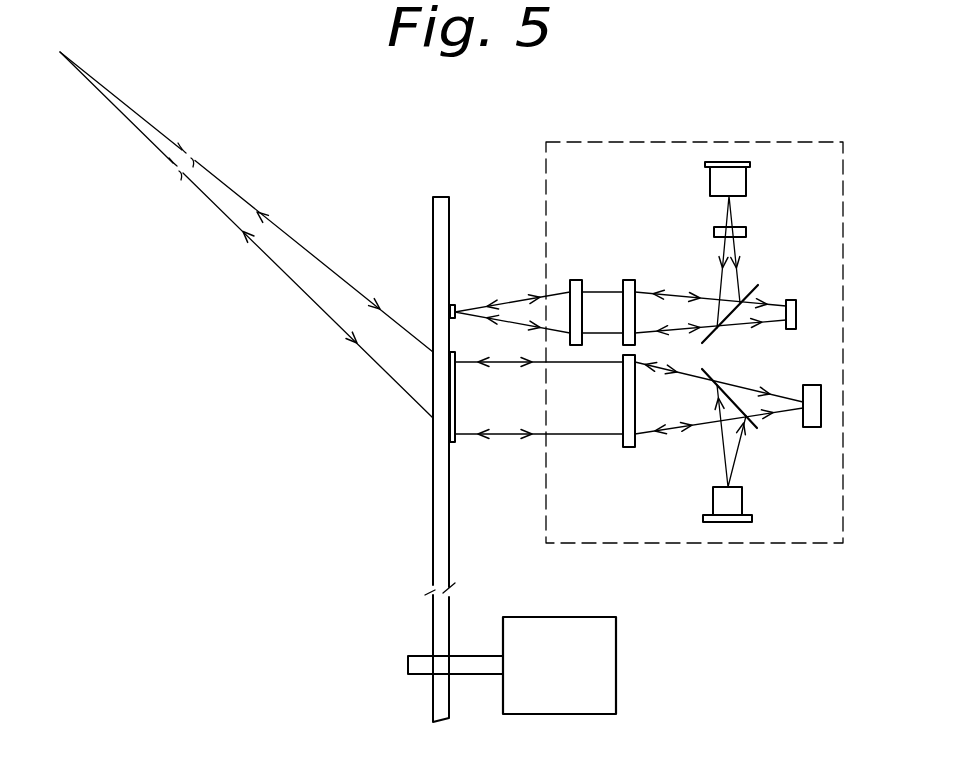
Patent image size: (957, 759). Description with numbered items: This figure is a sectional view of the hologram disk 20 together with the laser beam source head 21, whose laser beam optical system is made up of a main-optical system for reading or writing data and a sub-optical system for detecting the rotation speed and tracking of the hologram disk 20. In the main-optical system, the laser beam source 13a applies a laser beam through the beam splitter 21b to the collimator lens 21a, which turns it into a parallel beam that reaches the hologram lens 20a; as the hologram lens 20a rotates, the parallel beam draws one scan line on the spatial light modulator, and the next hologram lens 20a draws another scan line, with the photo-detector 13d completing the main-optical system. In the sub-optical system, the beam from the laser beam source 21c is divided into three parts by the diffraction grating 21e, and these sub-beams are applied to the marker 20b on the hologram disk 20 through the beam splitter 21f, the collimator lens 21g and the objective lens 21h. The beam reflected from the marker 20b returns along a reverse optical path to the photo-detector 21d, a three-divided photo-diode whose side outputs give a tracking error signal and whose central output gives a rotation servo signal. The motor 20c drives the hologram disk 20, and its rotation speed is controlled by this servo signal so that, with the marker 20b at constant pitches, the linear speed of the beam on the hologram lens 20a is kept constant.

The hologram disk 20 is at (438, 197).
The hologram lens 20a is at (456, 443).
The marker 20b is at (457, 306).
The motor 20c is at (616, 662).
The laser beam source head 21 is at (545, 152).
The collimator lens 21a is at (633, 450).
The beam splitter 21b is at (752, 430).
The laser beam source 21c is at (746, 180).
The photo-detector 21d is at (796, 314).
The diffraction grating 21e is at (714, 232).
The beam splitter 21f is at (758, 286).
The collimator lens 21g is at (631, 280).
The objective lens 21h is at (577, 280).
The laser beam source 13a is at (736, 524).
The photo-detector 13d is at (821, 405).